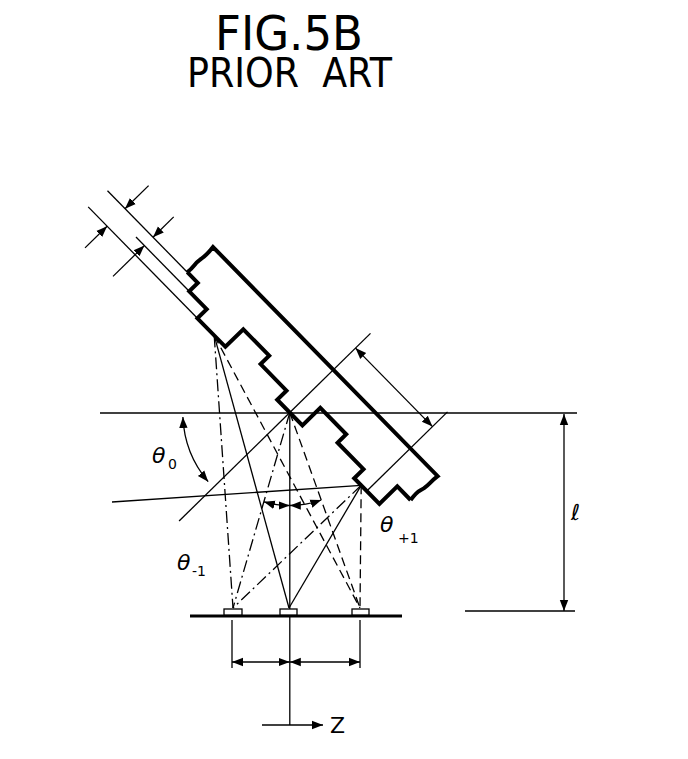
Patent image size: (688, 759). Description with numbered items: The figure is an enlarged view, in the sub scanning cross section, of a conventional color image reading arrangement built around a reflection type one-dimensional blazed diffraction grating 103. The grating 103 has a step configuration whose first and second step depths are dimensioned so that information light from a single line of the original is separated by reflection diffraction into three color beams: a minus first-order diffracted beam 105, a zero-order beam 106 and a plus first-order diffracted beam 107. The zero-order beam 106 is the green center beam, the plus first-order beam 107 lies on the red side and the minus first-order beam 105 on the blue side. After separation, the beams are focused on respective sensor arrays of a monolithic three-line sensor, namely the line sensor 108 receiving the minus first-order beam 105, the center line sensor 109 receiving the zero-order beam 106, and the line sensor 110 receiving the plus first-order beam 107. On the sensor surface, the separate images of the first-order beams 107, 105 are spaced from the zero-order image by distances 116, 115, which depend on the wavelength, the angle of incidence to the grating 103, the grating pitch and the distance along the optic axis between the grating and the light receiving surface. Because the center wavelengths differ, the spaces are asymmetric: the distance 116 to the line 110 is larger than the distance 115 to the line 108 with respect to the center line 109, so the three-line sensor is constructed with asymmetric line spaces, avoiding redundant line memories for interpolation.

The reflection type one-dimensional blazed diffraction grating 103 is at (281, 314).
The minus first-order diffracted beam 105 is at (257, 585).
The zero-order beam 106 is at (287, 584).
The plus first-order diffracted beam 107 is at (345, 563).
The line sensor 108 is at (230, 620).
The line sensor 109 is at (292, 620).
The line sensor 110 is at (363, 620).
The distance 115 is at (261, 644).
The distance 116 is at (325, 644).